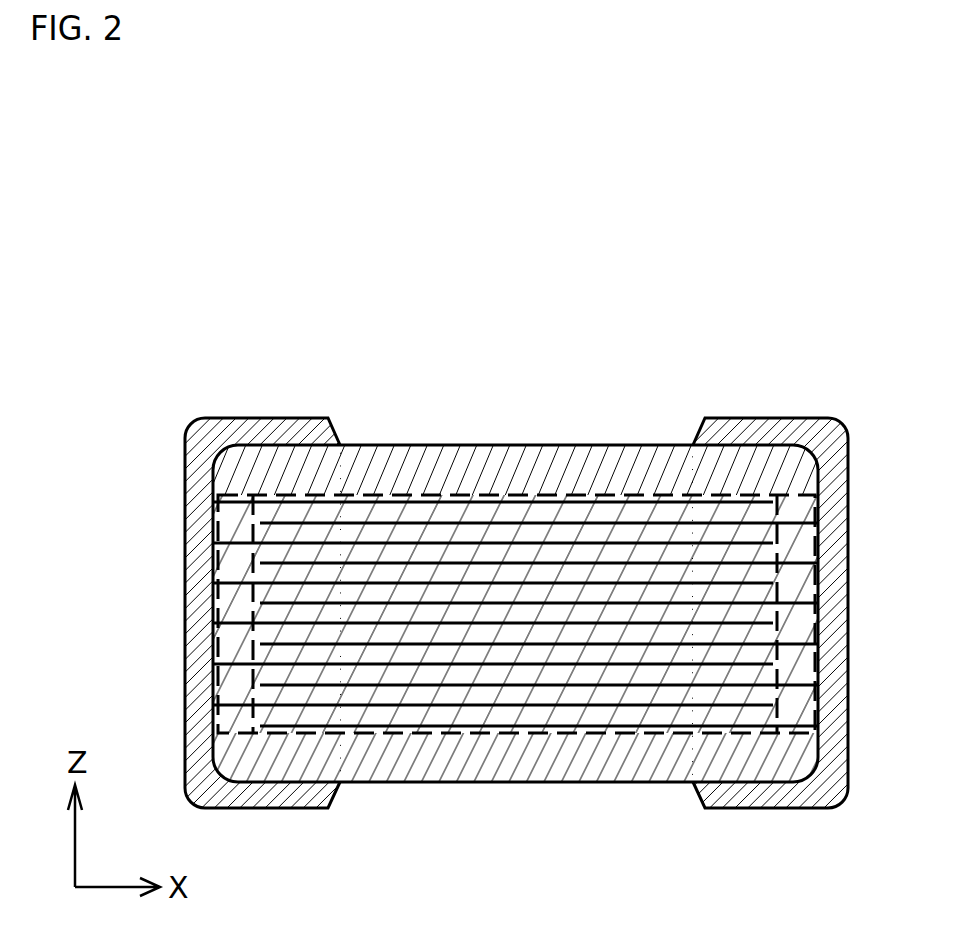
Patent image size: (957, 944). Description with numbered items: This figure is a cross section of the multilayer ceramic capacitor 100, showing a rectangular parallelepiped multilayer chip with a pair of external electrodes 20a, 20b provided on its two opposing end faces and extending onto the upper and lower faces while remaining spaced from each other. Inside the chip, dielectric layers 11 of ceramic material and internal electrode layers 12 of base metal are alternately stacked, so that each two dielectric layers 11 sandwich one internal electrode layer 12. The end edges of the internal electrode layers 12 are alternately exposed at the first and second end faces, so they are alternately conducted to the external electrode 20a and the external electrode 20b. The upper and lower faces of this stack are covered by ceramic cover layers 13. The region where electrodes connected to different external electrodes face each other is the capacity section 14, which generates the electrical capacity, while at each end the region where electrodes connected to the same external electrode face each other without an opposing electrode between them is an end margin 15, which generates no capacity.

The multilayer ceramic capacitor 100 is at (509, 561).
The dielectric layer 11 is at (515, 606).
The internal electrode layer 12 is at (458, 665).
The cover layer 13 is at (410, 460).
The capacity section 14 is at (540, 490).
The end margin 15 is at (238, 495).
The external electrode 20a is at (208, 420).
The external electrode 20b is at (810, 418).